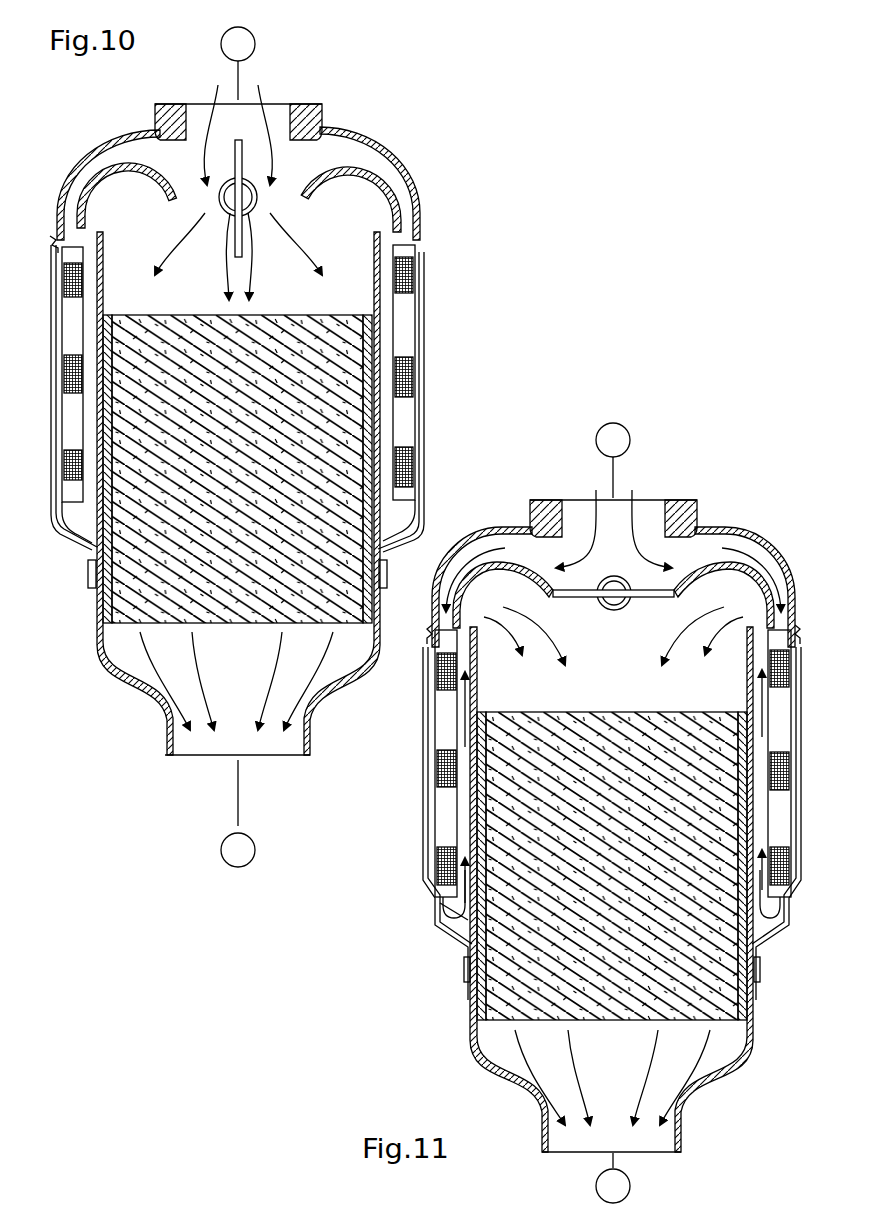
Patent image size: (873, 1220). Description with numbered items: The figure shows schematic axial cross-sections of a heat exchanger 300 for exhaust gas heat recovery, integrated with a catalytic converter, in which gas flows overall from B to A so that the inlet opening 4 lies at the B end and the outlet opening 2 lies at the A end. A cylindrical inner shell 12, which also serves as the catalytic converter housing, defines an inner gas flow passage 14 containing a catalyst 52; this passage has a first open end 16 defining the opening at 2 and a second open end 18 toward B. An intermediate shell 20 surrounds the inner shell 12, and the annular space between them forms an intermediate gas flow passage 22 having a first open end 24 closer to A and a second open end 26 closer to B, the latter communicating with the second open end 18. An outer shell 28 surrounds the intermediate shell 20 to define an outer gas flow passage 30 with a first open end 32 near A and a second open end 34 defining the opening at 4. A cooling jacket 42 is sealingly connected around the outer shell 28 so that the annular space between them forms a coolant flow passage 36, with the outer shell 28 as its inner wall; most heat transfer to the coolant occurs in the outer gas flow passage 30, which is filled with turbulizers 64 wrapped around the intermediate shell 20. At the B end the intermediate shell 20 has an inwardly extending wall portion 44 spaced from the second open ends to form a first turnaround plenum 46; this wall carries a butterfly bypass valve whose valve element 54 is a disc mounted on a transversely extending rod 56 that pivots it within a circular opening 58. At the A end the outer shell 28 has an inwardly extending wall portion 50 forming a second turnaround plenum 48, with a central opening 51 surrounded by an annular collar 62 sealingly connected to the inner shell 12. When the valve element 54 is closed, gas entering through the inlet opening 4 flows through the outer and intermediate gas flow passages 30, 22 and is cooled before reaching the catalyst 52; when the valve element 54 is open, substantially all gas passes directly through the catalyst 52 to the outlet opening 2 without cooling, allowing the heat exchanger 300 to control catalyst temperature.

In FIG. 10, the outlet opening 2 is at (200, 757).
In FIG. 11, the outlet opening 2 is at (668, 1153).
In FIG. 10, the inlet opening 4 is at (280, 104).
In FIG. 11, the inlet opening 4 is at (663, 498).
In FIG. 10, the inner shell 12 is at (377, 435).
In FIG. 11, the inner shell 12 is at (752, 802).
In FIG. 10, the inner gas flow passage 14 is at (356, 250).
In FIG. 11, the inner gas flow passage 14 is at (597, 702).
In FIG. 10, the first open end 16 is at (197, 758).
In FIG. 11, the first open end 16 is at (562, 1153).
In FIG. 10, the second open end 18 is at (392, 262).
In FIG. 11, the second open end 18 is at (540, 612).
In FIG. 10, the intermediate shell 20 is at (395, 348).
In FIG. 11, the intermediate shell 20 is at (768, 827).
In FIG. 10, the intermediate gas flow passage 22 is at (385, 402).
In FIG. 11, the intermediate gas flow passage 22 is at (758, 842).
In FIG. 10, the first open end 24 is at (88, 512).
In FIG. 11, the first open end 24 is at (453, 928).
In FIG. 10, the second open end 26 is at (90, 215).
In FIG. 11, the second open end 26 is at (468, 640).
In FIG. 10, the outer shell 28 is at (62, 328).
In FIG. 11, the outer shell 28 is at (790, 688).
In FIG. 10, the outer gas flow passage 30 is at (75, 423).
In FIG. 11, the outer gas flow passage 30 is at (443, 802).
In FIG. 10, the first open end 32 is at (68, 510).
In FIG. 11, the first open end 32 is at (443, 912).
In FIG. 10, the second open end 34 is at (62, 248).
In FIG. 11, the second open end 34 is at (434, 634).
In FIG. 10, the coolant flow passage 36 is at (417, 298).
In FIG. 11, the coolant flow passage 36 is at (432, 725).
In FIG. 10, the cooling jacket 42 is at (422, 380).
In FIG. 11, the cooling jacket 42 is at (427, 692).
In FIG. 10, the inwardly extending wall portion 44 is at (370, 205).
In FIG. 11, the inwardly extending wall portion 44 is at (722, 565).
In FIG. 10, the first turnaround plenum 46 is at (418, 195).
In FIG. 11, the first turnaround plenum 46 is at (763, 587).
In FIG. 10, the second turnaround plenum 48 is at (405, 527).
In FIG. 11, the second turnaround plenum 48 is at (763, 922).
In FIG. 10, the inwardly extending wall portion 50 is at (87, 567).
In FIG. 11, the inwardly extending wall portion 50 is at (455, 947).
In FIG. 10, the central opening 51 is at (98, 593).
In FIG. 11, the central opening 51 is at (467, 987).
In FIG. 10, the catalyst 52 is at (226, 472).
In FIG. 11, the catalyst 52 is at (599, 900).
In FIG. 10, the valve element 54 is at (222, 105).
In FIG. 11, the valve element 54 is at (572, 597).
In FIG. 10, the rod 56 is at (247, 210).
In FIG. 11, the rod 56 is at (628, 578).
In FIG. 10, the circular opening 58 is at (280, 195).
In FIG. 11, the circular opening 58 is at (670, 601).
In FIG. 10, the collar 62 is at (387, 573).
In FIG. 11, the collar 62 is at (760, 968).
In FIG. 10, the turbulizers 64 is at (405, 480).
In FIG. 11, the turbulizers 64 is at (440, 848).
In FIG. 10, the heat exchanger 300 is at (440, 170).
In FIG. 11, the heat exchanger 300 is at (777, 527).